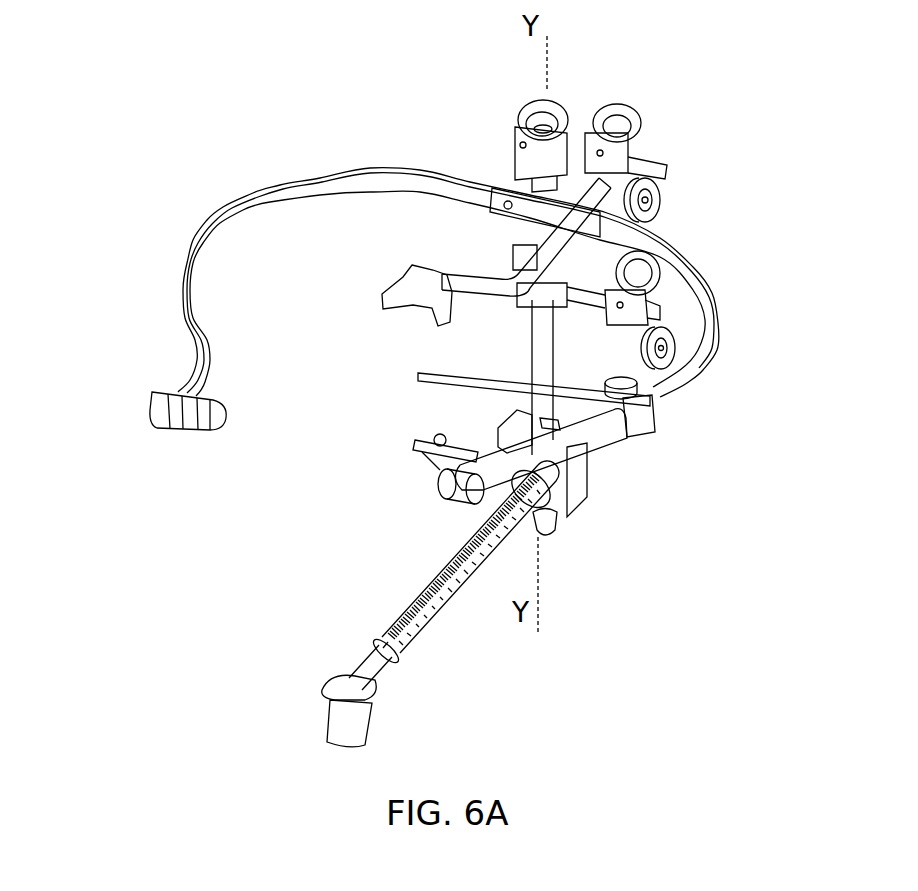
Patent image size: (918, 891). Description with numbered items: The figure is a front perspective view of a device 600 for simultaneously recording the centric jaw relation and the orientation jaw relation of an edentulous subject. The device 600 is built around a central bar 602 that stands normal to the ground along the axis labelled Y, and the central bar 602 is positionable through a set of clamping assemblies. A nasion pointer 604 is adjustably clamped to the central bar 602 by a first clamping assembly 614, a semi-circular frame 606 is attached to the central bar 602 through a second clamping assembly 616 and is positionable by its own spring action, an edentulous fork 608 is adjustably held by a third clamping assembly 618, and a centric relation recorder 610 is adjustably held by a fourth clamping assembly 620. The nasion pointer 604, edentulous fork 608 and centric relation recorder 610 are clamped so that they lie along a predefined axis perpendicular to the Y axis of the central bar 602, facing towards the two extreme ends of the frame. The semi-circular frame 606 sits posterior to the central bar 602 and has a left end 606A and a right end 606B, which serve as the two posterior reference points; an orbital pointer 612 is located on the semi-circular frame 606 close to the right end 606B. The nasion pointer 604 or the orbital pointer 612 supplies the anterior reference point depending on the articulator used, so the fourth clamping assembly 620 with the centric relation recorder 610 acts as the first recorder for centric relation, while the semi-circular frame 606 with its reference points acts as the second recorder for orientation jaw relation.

The device 600 is at (621, 610).
The central bar 602 is at (560, 335).
The nasion pointer 604 is at (493, 292).
The semi-circular frame 606 is at (186, 267).
The left end 606A is at (217, 420).
The right end 606B is at (470, 483).
The edentulous fork 608 is at (440, 455).
The centric relation recorder 610 is at (463, 592).
The orbital pointer 612 is at (463, 387).
The first clamping assembly 614 is at (650, 118).
The second clamping assembly 616 is at (517, 190).
The third clamping assembly 618 is at (680, 337).
The fourth clamping assembly 620 is at (582, 487).